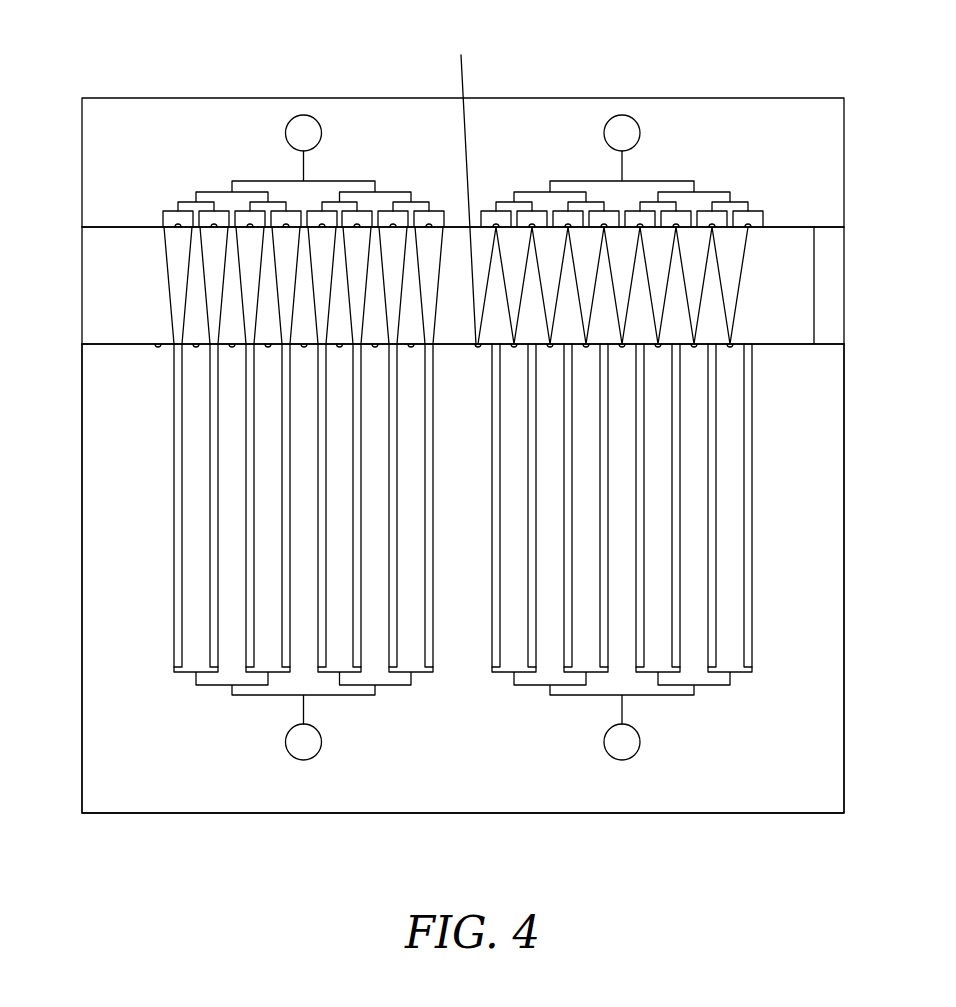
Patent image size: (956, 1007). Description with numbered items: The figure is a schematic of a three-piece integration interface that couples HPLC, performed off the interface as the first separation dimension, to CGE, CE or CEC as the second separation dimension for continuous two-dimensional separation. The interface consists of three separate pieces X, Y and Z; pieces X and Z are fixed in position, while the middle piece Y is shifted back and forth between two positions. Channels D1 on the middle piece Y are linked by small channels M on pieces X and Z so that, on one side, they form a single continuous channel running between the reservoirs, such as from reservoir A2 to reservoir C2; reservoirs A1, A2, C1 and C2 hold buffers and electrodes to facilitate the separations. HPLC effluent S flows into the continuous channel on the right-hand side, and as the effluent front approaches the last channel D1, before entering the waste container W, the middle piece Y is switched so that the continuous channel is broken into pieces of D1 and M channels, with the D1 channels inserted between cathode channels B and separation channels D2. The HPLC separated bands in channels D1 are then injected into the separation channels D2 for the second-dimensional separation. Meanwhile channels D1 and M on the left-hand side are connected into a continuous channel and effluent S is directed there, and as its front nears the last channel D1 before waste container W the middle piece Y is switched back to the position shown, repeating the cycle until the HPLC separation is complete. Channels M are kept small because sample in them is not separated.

The piece X is at (167, 112).
The middle piece Y is at (92, 278).
The piece Z is at (145, 805).
The HPLC effluent S is at (465, 186).
The waste container W is at (145, 227).
The cathode channels B is at (757, 207).
The reservoir C1 is at (289, 131).
The reservoir C2 is at (611, 128).
The channels D1 is at (170, 294).
The separation channels D2 is at (173, 516).
The channels M is at (193, 348).
The reservoir A1 is at (296, 748).
The reservoir A2 is at (614, 748).